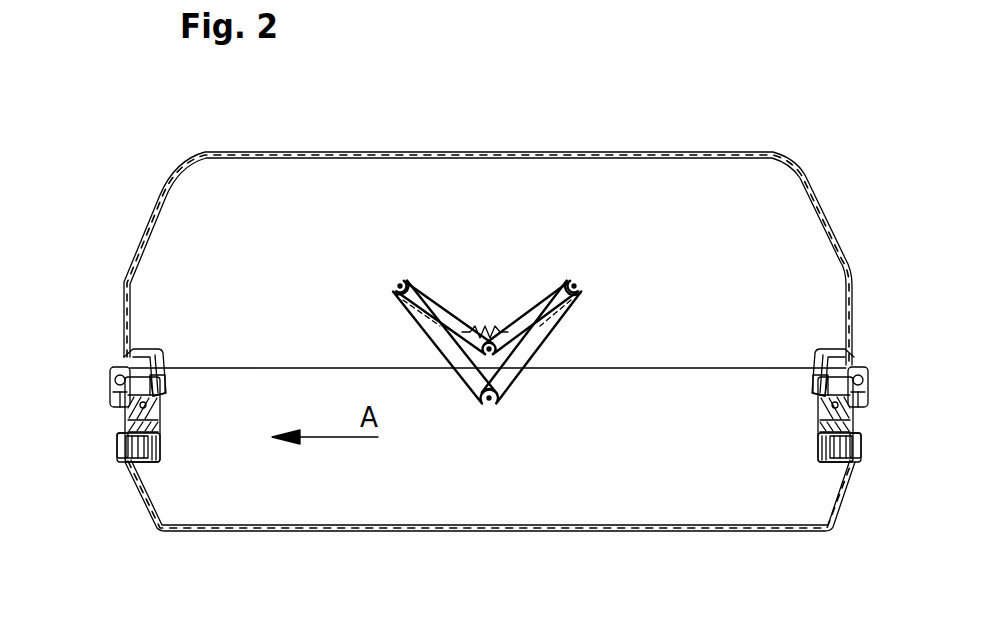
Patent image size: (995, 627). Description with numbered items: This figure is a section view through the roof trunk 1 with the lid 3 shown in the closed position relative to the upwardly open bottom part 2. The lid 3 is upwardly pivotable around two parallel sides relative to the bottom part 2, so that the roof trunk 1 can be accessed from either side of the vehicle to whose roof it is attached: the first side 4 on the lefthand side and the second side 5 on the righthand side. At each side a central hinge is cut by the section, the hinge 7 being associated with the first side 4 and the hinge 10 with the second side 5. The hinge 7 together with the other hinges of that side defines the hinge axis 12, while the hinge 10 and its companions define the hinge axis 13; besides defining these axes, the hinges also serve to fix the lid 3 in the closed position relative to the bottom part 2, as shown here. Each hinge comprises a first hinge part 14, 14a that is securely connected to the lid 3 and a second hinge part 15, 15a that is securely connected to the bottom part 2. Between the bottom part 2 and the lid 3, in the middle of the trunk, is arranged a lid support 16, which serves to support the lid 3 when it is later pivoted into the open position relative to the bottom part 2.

The roof trunk 1 is at (802, 131).
The bottom part 2 is at (838, 526).
The lid 3 is at (845, 249).
The first side 4 is at (95, 399).
The second side 5 is at (888, 402).
The hinge 7 is at (174, 374).
The hinge 10 is at (798, 362).
The hinge axis 12 is at (162, 402).
The hinge axis 13 is at (820, 404).
The first hinge part 14 is at (154, 352).
The first hinge part 14a is at (823, 355).
The second hinge part 15 is at (165, 410).
The second hinge part 15a is at (821, 408).
The lid support 16 is at (565, 340).